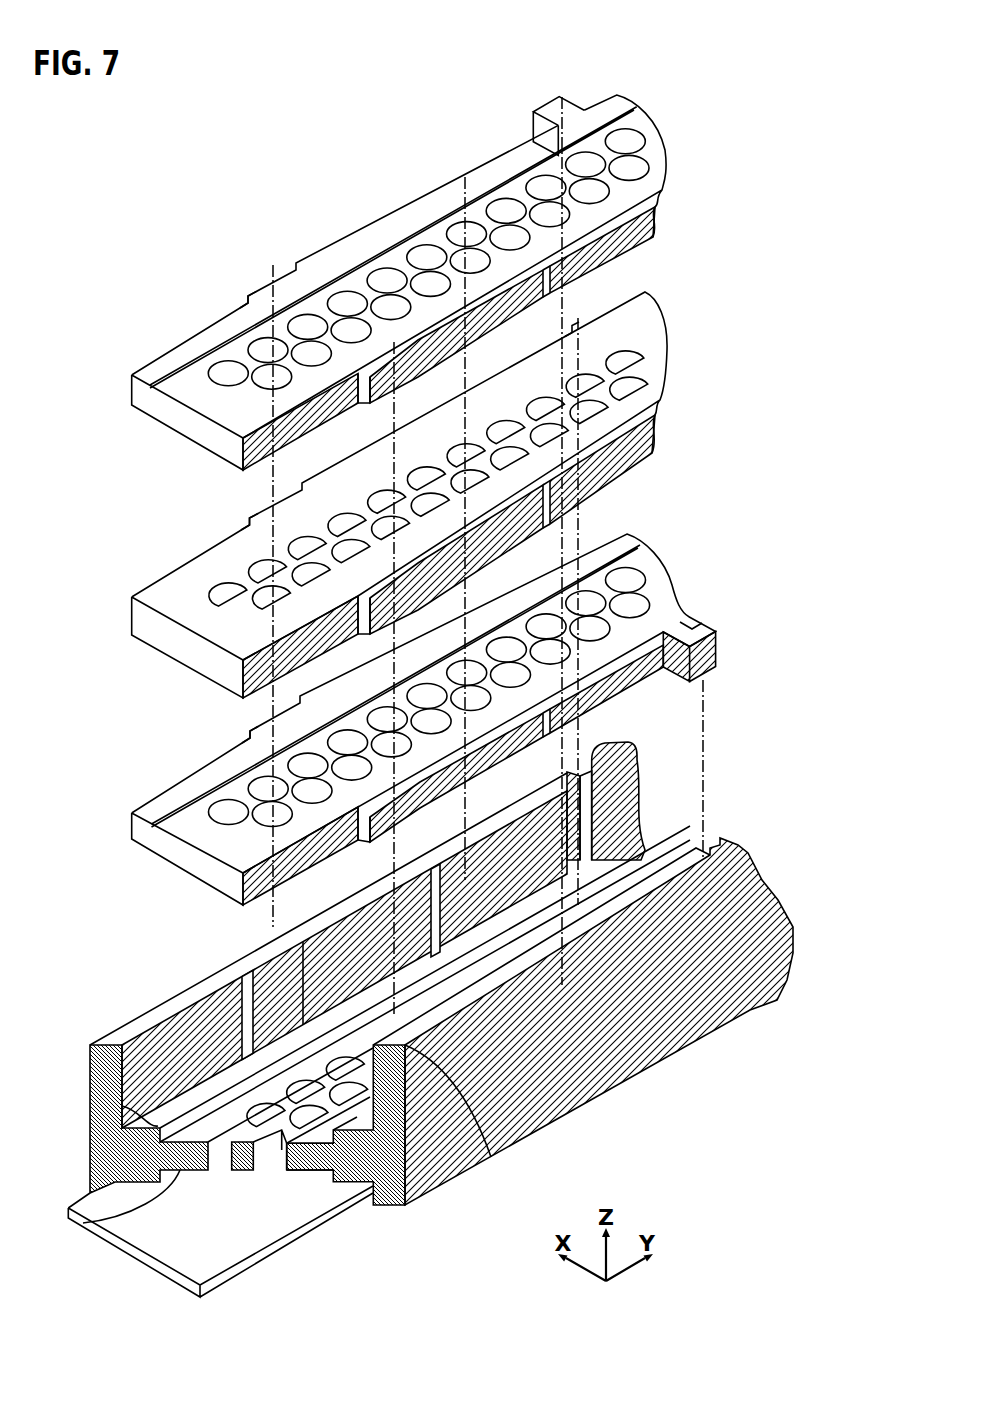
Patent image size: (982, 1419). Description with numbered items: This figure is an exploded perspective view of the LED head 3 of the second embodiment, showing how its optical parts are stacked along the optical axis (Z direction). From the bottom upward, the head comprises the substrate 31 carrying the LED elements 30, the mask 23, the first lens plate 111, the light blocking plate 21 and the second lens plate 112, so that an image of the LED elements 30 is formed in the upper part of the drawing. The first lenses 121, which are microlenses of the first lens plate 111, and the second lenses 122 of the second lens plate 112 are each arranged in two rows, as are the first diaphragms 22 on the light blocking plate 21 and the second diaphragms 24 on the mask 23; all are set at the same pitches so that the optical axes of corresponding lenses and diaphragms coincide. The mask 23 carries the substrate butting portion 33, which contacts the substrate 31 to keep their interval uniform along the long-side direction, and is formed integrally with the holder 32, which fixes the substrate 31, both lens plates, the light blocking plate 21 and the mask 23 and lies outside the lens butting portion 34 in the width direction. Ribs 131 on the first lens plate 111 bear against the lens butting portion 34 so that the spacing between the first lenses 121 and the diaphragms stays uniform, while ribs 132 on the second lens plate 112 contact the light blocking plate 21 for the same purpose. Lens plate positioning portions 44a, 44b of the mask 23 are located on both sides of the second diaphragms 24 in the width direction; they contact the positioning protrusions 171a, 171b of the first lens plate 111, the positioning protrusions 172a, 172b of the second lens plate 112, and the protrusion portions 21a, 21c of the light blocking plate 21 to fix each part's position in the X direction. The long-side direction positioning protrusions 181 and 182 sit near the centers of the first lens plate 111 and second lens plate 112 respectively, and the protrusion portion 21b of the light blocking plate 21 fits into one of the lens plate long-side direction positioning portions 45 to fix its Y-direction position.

The LED head 3 is at (134, 174).
The second lens plate 112 is at (152, 358).
The second lenses 122 is at (222, 368).
The ribs 132 is at (232, 321).
The positioning protrusions 172a is at (260, 293).
The positioning protrusions 172b is at (372, 405).
The long-side direction positioning protrusion 182 is at (533, 111).
The light blocking plate 21 is at (162, 590).
The first diaphragms 22 is at (213, 587).
The protrusion portions 21a is at (252, 520).
The protrusion portion 21b is at (572, 330).
The protrusion portions 21c is at (378, 636).
The first lens plate 111 is at (150, 798).
The first lenses 121 is at (228, 808).
The ribs 131 is at (190, 790).
The positioning protrusions 171a is at (250, 727).
The positioning protrusions 171b is at (385, 833).
The long-side direction positioning protrusion 181 is at (693, 637).
The LED elements 30 is at (215, 1192).
The substrate 31 is at (90, 1206).
The holder 32 is at (150, 1013).
The substrate butting portion 33 is at (93, 1228).
The lens butting portion 34 is at (122, 1106).
The mask 23 is at (299, 1160).
The second diaphragms 24 is at (320, 1118).
The lens plate positioning portions 44a is at (256, 963).
The lens plate positioning portions 44b is at (484, 1152).
The lens plate long-side direction positioning portions 45 is at (706, 862).